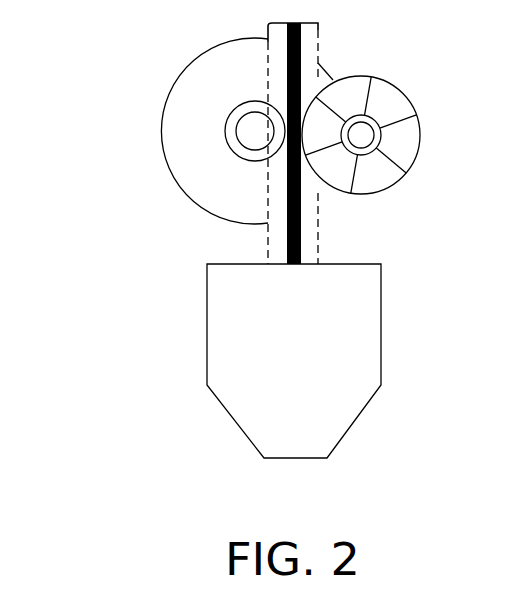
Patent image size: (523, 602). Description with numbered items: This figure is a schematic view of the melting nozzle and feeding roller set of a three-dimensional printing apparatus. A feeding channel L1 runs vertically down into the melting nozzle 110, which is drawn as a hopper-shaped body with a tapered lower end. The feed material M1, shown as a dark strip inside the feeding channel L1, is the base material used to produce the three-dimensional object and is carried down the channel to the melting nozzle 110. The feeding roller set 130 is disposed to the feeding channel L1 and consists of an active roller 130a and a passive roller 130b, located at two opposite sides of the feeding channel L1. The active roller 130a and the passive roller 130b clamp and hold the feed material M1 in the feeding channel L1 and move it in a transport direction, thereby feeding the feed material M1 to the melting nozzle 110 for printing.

The melting nozzle 110 is at (381, 330).
The feeding roller set 130 is at (218, 131).
The active roller 130a is at (333, 167).
The passive roller 130b is at (187, 162).
The feeding channel L1 is at (268, 58).
The feed material M1 is at (301, 235).